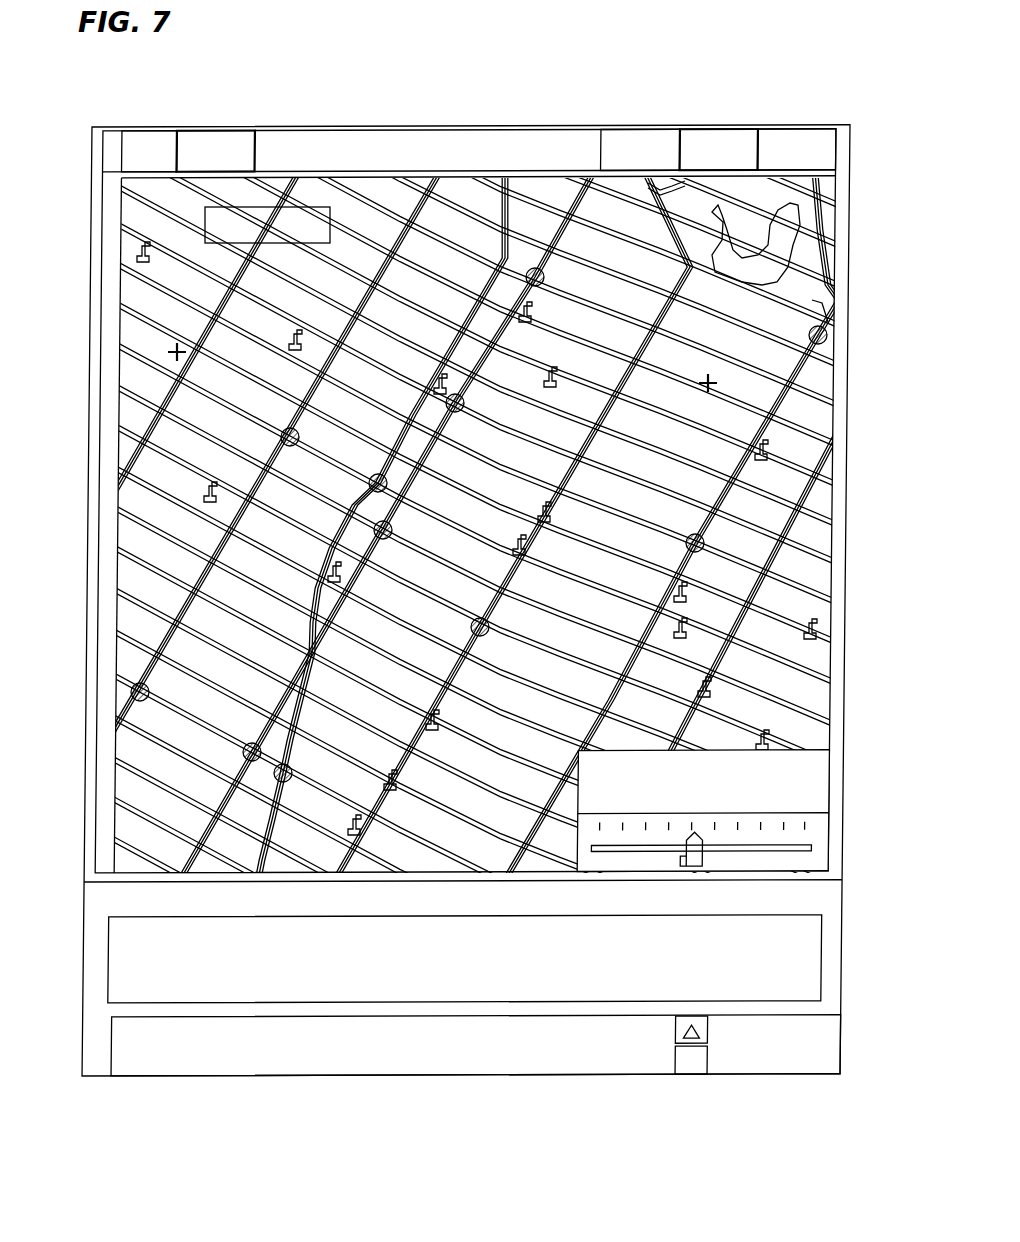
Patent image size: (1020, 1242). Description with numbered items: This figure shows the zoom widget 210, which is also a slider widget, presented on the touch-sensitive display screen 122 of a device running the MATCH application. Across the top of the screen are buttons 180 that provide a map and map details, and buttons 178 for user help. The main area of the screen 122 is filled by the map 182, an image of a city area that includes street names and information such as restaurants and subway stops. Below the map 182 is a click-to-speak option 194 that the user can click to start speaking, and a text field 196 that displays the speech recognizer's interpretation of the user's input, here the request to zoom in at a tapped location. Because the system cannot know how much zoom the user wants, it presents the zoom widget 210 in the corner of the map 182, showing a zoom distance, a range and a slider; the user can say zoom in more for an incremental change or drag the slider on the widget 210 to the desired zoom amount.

The display screen 122 is at (854, 550).
The buttons for user help 178 is at (802, 136).
The buttons that provide a map and map details 180 is at (211, 140).
The map 182 is at (235, 577).
The click-to-speak option 194 is at (812, 958).
The text field 196 is at (182, 1068).
The zoom widget 210 is at (829, 834).